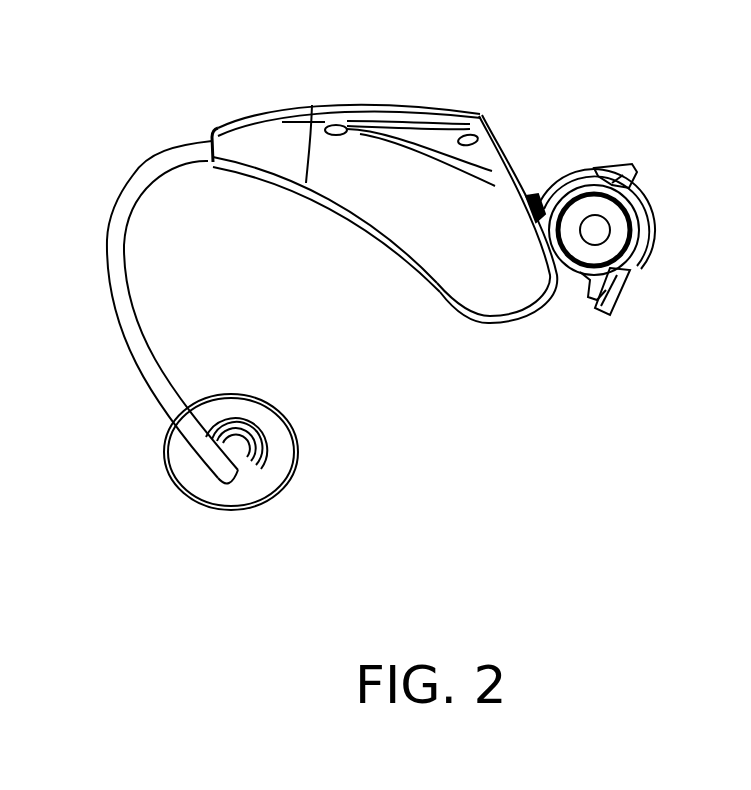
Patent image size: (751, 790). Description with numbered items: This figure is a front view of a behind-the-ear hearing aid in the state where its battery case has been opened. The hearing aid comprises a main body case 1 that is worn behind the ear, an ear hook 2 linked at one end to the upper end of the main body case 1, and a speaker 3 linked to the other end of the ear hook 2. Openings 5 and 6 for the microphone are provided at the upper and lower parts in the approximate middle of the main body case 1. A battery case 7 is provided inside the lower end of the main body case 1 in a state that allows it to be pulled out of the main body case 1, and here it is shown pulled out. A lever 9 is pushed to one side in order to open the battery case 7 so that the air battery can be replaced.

The main body case 1 is at (425, 237).
The ear hook 2 is at (123, 292).
The speaker 3 is at (258, 398).
The opening 5 is at (334, 126).
The opening 6 is at (479, 132).
The battery case 7 is at (645, 203).
The lever 9 is at (623, 165).